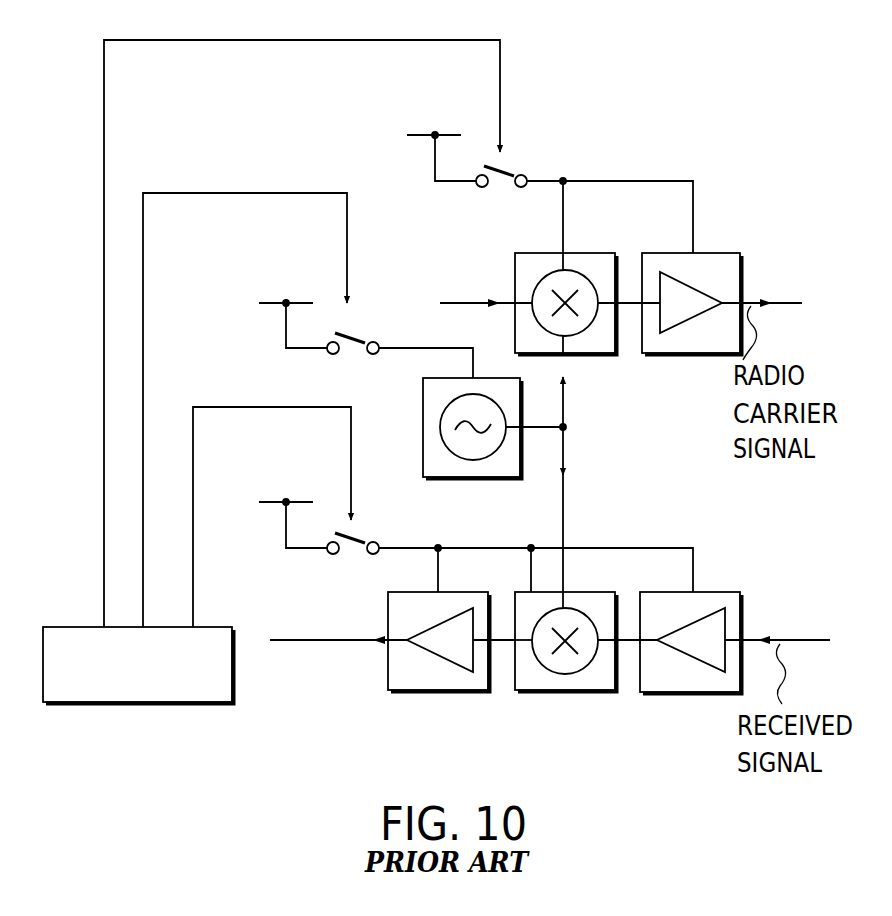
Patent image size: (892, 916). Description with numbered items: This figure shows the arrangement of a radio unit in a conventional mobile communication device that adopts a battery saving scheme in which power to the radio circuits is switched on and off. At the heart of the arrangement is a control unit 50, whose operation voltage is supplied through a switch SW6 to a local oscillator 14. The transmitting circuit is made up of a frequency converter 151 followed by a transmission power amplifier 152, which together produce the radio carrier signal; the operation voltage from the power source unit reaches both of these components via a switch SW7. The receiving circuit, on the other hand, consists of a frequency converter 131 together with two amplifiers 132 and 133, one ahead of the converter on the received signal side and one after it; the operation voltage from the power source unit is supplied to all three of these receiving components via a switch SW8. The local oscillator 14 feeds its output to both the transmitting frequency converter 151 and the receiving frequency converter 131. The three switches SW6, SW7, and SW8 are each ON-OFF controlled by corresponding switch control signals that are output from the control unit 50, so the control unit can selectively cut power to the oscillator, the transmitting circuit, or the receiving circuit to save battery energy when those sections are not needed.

The control unit 50 is at (168, 703).
The local oscillator 14 is at (470, 478).
The frequency converter 151 is at (598, 355).
The transmission power amplifier 152 is at (717, 253).
The frequency converter 131 is at (575, 692).
The amplifier 132 is at (710, 592).
The amplifier 133 is at (433, 692).
The switch SW6 is at (357, 335).
The switch SW7 is at (513, 163).
The switch SW8 is at (355, 535).